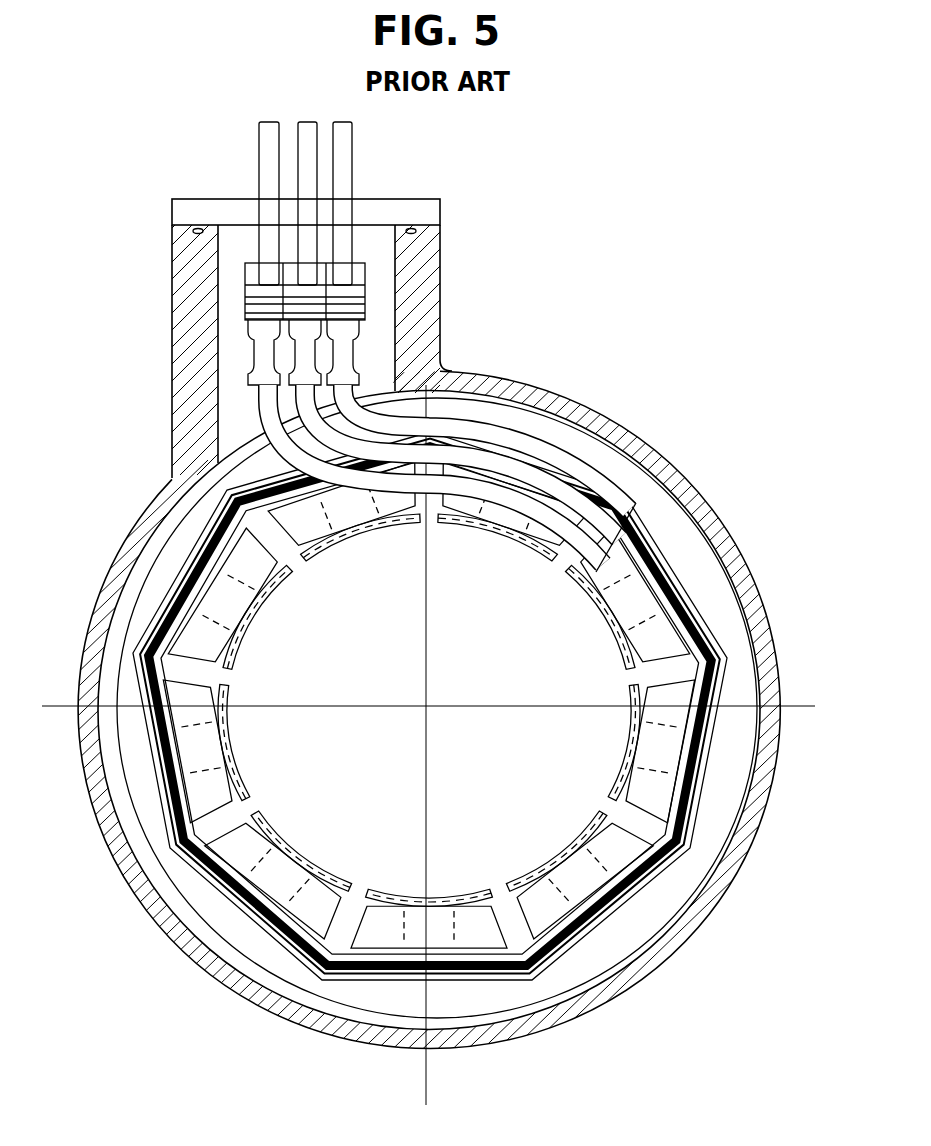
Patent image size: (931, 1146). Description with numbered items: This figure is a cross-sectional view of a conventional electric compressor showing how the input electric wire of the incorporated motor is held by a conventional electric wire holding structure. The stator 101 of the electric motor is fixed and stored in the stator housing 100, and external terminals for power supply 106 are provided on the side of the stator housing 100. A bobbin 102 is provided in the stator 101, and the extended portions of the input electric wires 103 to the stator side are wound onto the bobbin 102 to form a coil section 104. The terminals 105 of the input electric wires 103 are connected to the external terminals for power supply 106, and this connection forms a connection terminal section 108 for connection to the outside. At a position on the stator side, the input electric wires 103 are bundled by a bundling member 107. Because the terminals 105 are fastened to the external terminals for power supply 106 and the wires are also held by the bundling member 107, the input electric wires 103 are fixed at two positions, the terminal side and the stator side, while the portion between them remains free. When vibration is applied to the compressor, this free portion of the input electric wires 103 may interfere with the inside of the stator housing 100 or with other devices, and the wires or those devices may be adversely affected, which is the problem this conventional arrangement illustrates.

The stator housing 100 is at (633, 423).
The stator 101 is at (622, 937).
The bobbin 102 is at (340, 990).
The input electric wires 103 is at (436, 455).
The coil section 104 is at (491, 936).
The terminals 105 is at (345, 337).
The external terminals for power supply 106 is at (348, 159).
The bundling member 107 is at (640, 512).
The connection terminal section 108 is at (380, 280).